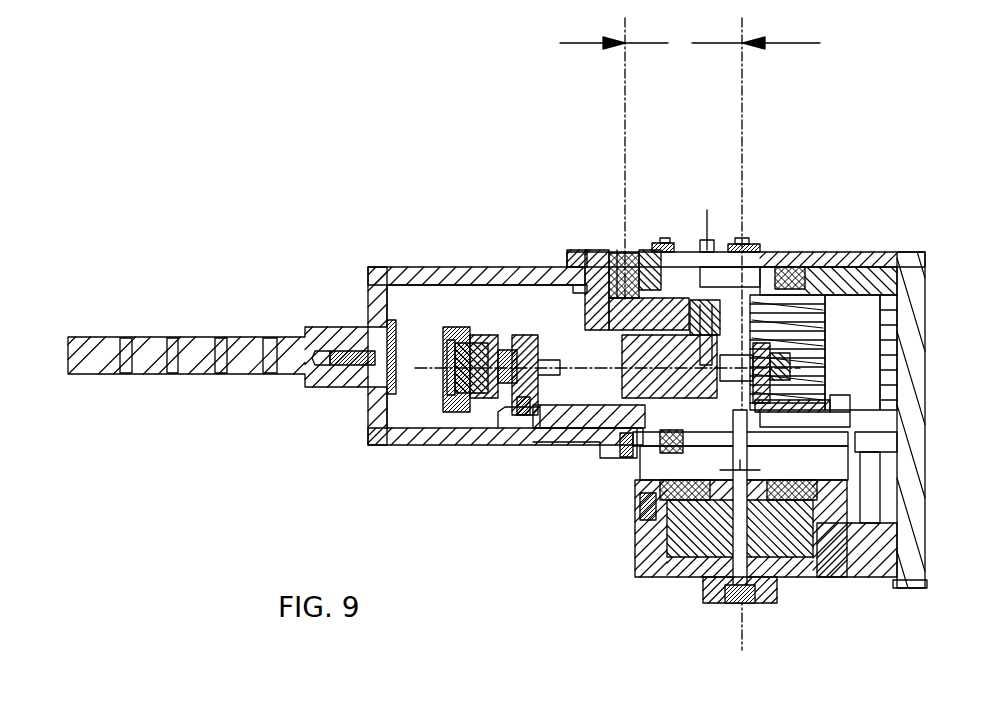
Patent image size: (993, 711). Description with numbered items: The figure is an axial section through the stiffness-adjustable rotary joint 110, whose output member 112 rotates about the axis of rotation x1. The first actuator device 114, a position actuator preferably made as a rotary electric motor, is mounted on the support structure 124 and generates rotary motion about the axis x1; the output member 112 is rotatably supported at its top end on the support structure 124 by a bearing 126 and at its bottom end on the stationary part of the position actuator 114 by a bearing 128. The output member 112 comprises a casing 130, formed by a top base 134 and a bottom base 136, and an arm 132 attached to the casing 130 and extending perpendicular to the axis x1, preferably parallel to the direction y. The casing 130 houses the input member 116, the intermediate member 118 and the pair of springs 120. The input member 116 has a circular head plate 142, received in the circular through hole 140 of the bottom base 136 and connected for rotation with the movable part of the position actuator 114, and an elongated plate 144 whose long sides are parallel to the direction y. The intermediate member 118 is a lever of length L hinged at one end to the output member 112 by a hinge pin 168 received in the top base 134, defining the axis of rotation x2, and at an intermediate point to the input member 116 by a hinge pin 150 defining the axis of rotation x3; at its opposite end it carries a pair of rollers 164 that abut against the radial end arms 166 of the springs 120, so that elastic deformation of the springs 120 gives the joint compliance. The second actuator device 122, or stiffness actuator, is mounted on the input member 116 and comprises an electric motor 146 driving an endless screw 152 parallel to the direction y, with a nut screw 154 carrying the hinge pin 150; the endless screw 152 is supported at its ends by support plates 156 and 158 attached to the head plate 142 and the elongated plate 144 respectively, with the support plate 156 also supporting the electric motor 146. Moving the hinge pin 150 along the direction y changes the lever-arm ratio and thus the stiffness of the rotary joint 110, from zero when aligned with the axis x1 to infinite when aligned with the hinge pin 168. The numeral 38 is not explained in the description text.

The direction arrow 38 is at (591, 346).
The stiffness-adjustable rotary joint 110 is at (824, 238).
The output member 112 is at (427, 450).
The first actuator device 114 is at (680, 586).
The input member 116 is at (548, 335).
The intermediate member 118 is at (659, 250).
The springs 120 is at (825, 320).
The second actuator device 122 is at (483, 326).
The support structure 124 is at (925, 476).
The bearing 126 is at (788, 250).
The bearing 128 is at (870, 476).
The casing 130 is at (350, 268).
The arm 132 is at (247, 377).
The top base 134 is at (420, 267).
The bottom base 136 is at (458, 446).
The circular through hole 140 is at (627, 457).
The head plate 142 is at (830, 395).
The elongated plate 144 is at (565, 446).
The electric motor 146 is at (428, 445).
The hinge pin 150 is at (895, 262).
The endless screw 152 is at (545, 430).
The nut screw 154 is at (642, 455).
The support plate 156 is at (828, 367).
The support plate 158 is at (527, 340).
The rollers 164 is at (762, 250).
The radial end arms 166 is at (851, 285).
The hinge pin 168 is at (612, 250).
The length of the intermediate member L is at (690, 45).
The axis of rotation x1 is at (742, 170).
The axis of rotation x2 is at (625, 160).
The axis of rotation x3 is at (707, 210).
The longitudinal direction y is at (569, 392).